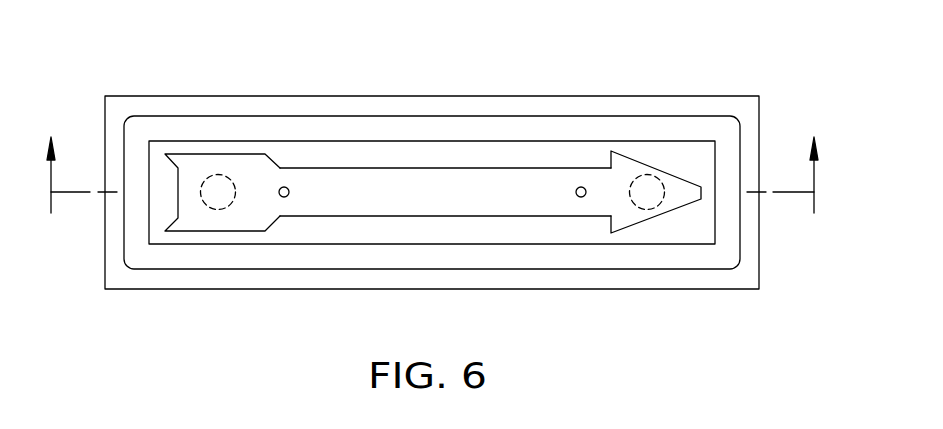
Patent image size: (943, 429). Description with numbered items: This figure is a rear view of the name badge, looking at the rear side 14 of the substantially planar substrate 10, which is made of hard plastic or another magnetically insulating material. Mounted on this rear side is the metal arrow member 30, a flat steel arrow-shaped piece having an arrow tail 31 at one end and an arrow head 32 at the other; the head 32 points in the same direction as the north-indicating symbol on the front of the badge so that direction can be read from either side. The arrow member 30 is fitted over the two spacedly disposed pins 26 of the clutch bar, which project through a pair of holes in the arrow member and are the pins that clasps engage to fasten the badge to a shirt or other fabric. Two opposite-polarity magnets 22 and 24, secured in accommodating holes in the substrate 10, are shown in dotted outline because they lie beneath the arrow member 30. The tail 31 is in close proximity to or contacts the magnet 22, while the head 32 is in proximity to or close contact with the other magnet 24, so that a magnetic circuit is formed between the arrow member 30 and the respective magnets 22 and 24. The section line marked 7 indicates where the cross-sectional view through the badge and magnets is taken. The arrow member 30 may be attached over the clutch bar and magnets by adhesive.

The substrate 10 is at (484, 82).
The rear side 14 is at (648, 102).
The magnet 22 is at (646, 195).
The magnet 24 is at (217, 195).
The pins 26 is at (284, 187).
The arrow member 30 is at (398, 163).
The arrow tail 31 is at (197, 163).
The arrow head 32 is at (678, 187).
The section line 7- 7 is at (431, 193).